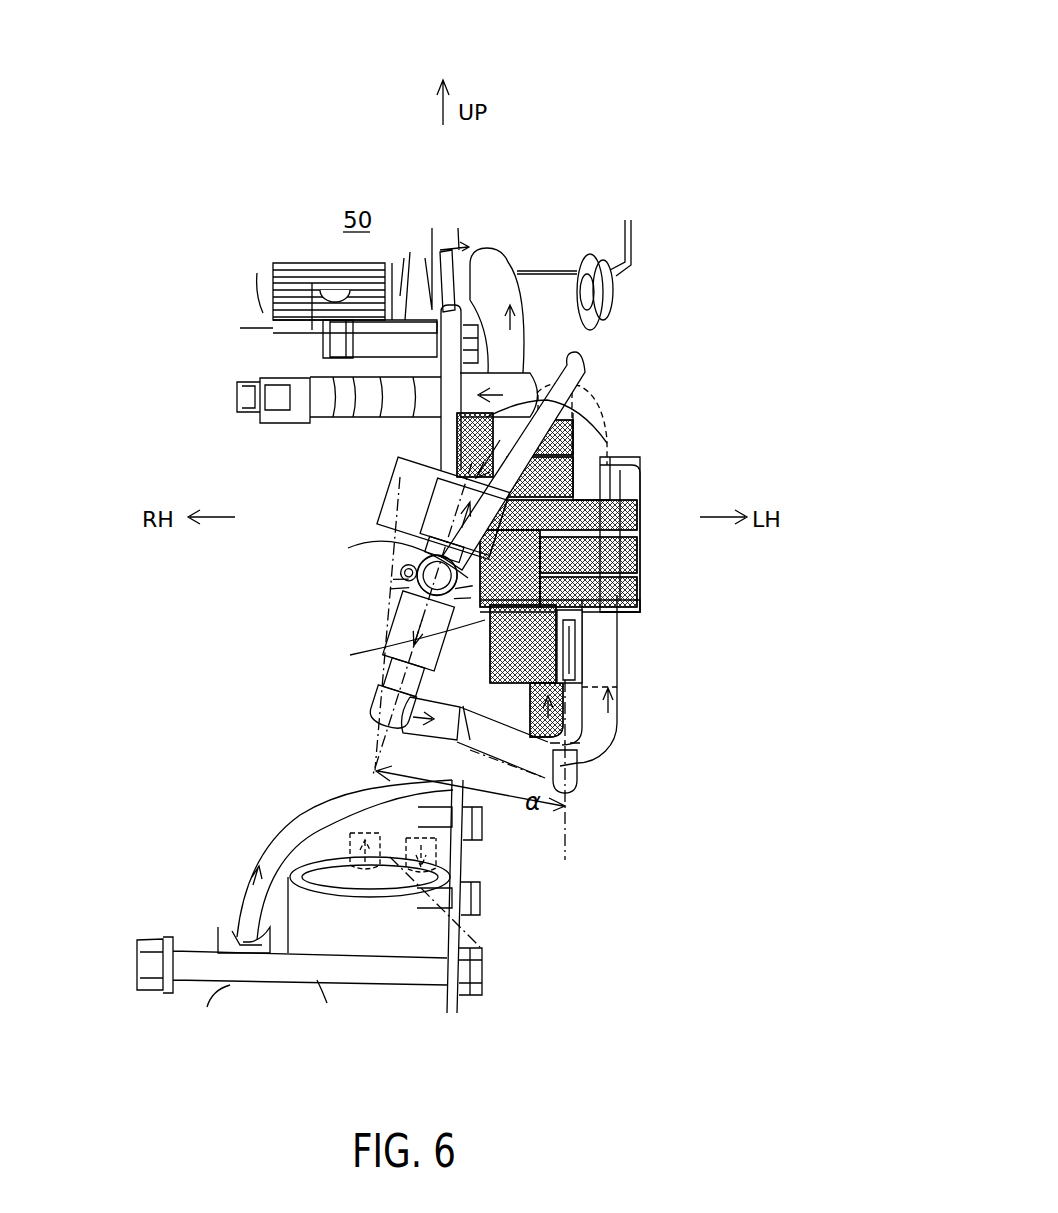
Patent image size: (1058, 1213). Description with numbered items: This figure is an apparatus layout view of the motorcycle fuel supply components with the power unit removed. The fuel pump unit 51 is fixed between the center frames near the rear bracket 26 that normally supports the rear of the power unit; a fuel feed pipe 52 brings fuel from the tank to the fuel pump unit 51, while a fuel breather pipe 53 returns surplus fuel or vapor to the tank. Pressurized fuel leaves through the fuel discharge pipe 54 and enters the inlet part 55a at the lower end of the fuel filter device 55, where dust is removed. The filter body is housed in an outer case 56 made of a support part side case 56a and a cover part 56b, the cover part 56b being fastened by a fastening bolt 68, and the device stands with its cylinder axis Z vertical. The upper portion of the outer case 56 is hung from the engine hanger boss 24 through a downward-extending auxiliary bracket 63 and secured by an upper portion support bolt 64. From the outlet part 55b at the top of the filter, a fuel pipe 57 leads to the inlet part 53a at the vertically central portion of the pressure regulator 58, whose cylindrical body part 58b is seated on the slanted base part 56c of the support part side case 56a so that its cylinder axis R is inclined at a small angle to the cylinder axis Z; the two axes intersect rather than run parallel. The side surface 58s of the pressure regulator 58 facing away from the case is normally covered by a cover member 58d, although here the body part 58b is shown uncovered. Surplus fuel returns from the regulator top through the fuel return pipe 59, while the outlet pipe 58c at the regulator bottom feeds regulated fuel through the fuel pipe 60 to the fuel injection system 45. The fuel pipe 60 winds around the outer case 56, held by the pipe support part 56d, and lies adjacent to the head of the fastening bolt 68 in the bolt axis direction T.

The engine hanger boss 24 is at (494, 268).
The auxiliary bracket 63 is at (547, 270).
The fuel return pipe 59 is at (580, 270).
The fuel pipe 60 is at (598, 285).
The upper portion support bolt 64 is at (633, 280).
The fuel injection system 45 is at (240, 400).
The outlet part 55b is at (580, 376).
The fuel pipe 57 is at (562, 406).
The support part side case 56a is at (567, 437).
The outer case 56 is at (661, 482).
The cover part 56b is at (637, 497).
The fuel filter device 55 is at (656, 556).
The pipe support part 56d is at (633, 597).
The base part 56c is at (397, 665).
The fastening bolt 68 is at (585, 685).
The bolt axis direction T is at (520, 650).
The inlet part 55a is at (588, 780).
The cylinder axis Z is at (567, 840).
The pressure regulator 58 is at (350, 590).
The side surface 58s is at (370, 560).
The inlet part 53a is at (387, 547).
The cylindrical body part 58b is at (373, 610).
The cover member 58d is at (360, 636).
The outlet pipe 58c is at (387, 740).
The cylinder axis R is at (372, 744).
The rear bracket 26 is at (467, 852).
The fuel feed pipe 52 is at (460, 867).
The fuel discharge pipe 54 is at (267, 852).
The fuel pump unit 51 is at (402, 942).
The fuel breather pipe 53 is at (460, 947).